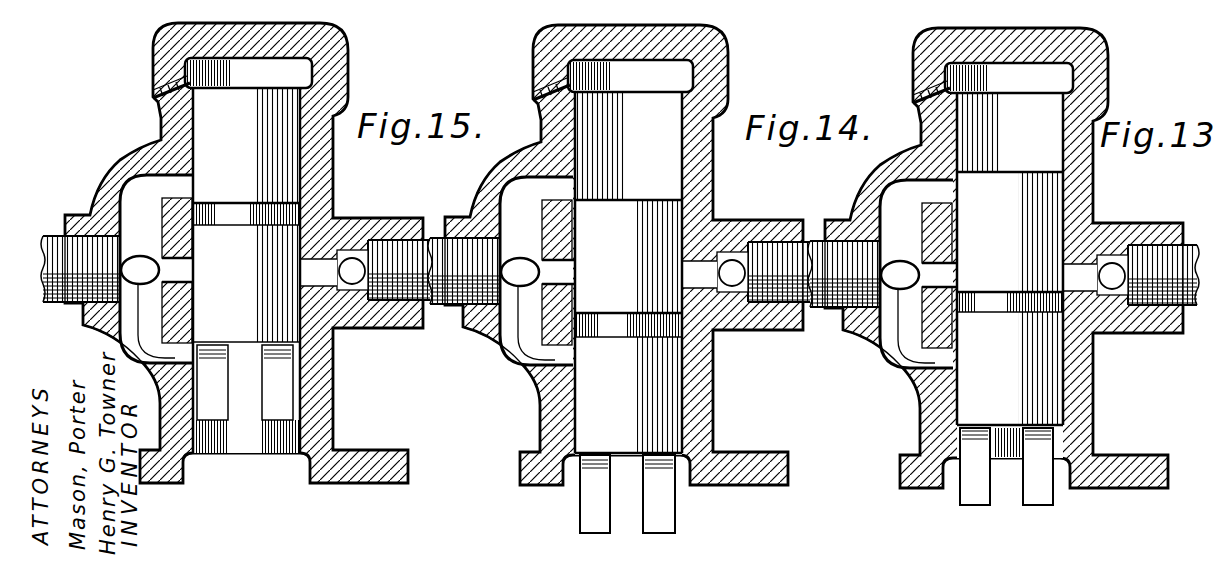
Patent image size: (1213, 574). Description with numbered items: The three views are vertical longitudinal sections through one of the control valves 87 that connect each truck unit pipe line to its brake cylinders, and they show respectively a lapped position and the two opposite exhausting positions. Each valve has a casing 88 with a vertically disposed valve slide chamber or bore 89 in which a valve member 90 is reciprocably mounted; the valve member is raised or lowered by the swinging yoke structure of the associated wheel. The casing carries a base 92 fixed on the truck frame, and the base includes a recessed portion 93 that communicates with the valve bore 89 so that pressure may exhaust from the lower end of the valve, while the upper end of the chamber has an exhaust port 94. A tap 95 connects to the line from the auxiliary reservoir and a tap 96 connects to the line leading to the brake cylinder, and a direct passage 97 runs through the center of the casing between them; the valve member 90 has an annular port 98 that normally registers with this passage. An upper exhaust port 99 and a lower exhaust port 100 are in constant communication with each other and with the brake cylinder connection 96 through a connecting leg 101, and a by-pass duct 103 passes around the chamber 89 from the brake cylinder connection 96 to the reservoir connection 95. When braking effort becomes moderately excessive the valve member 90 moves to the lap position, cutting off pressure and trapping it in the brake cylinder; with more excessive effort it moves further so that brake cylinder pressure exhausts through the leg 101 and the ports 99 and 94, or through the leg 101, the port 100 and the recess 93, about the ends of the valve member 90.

In FIG. 15, the control valve 87 is at (240, 151).
In FIG. 15, the casing 88 is at (168, 117).
In FIG. 14, the casing 88 is at (624, 255).
In FIG. 13, the casing 88 is at (1004, 258).
In FIG. 15, the valve slide chamber 89 is at (302, 163).
In FIG. 14, the valve slide chamber 89 is at (630, 257).
In FIG. 13, the valve slide chamber 89 is at (1009, 260).
In FIG. 15, the valve member 90 is at (257, 215).
In FIG. 14, the valve member 90 is at (637, 326).
In FIG. 13, the valve member 90 is at (1018, 298).
In FIG. 15, the base 92 is at (367, 463).
In FIG. 14, the base 92 is at (524, 454).
In FIG. 13, the base 92 is at (901, 453).
In FIG. 15, the recessed portion 93 is at (187, 471).
In FIG. 14, the recessed portion 93 is at (607, 493).
In FIG. 13, the recessed portion 93 is at (992, 480).
In FIG. 15, the exhaust port 94 is at (153, 73).
In FIG. 14, the exhaust port 94 is at (521, 80).
In FIG. 13, the exhaust port 94 is at (906, 83).
In FIG. 15, the tap 95 is at (388, 307).
In FIG. 14, the tap 95 is at (758, 296).
In FIG. 13, the tap 95 is at (1138, 278).
In FIG. 15, the tap 96 is at (57, 247).
In FIG. 14, the tap 96 is at (441, 299).
In FIG. 13, the tap 96 is at (821, 301).
In FIG. 15, the direct passage 97 is at (307, 267).
In FIG. 14, the direct passage 97 is at (662, 236).
In FIG. 13, the direct passage 97 is at (1043, 241).
In FIG. 15, the annular port 98 is at (227, 213).
In FIG. 14, the annular port 98 is at (628, 349).
In FIG. 13, the annular port 98 is at (1010, 320).
In FIG. 15, the upper exhaust port 99 is at (170, 182).
In FIG. 14, the upper exhaust port 99 is at (505, 179).
In FIG. 13, the upper exhaust port 99 is at (885, 182).
In FIG. 15, the lower exhaust port 100 is at (178, 350).
In FIG. 14, the lower exhaust port 100 is at (507, 370).
In FIG. 13, the lower exhaust port 100 is at (860, 372).
In FIG. 15, the connecting leg 101 is at (138, 203).
In FIG. 14, the connecting leg 101 is at (502, 264).
In FIG. 13, the connecting leg 101 is at (882, 268).
In FIG. 15, the by-pass duct 103 is at (142, 256).
In FIG. 14, the by-pass duct 103 is at (654, 242).
In FIG. 13, the by-pass duct 103 is at (1035, 243).